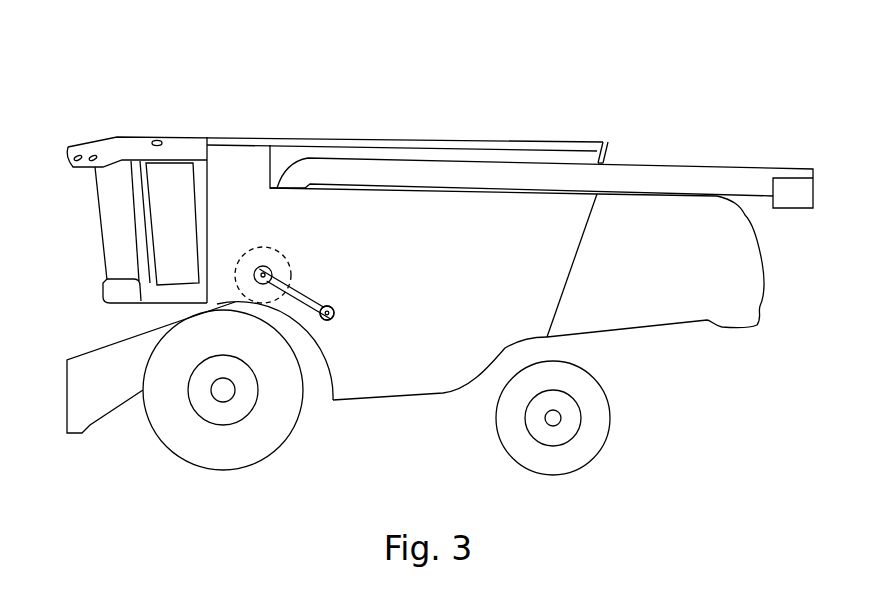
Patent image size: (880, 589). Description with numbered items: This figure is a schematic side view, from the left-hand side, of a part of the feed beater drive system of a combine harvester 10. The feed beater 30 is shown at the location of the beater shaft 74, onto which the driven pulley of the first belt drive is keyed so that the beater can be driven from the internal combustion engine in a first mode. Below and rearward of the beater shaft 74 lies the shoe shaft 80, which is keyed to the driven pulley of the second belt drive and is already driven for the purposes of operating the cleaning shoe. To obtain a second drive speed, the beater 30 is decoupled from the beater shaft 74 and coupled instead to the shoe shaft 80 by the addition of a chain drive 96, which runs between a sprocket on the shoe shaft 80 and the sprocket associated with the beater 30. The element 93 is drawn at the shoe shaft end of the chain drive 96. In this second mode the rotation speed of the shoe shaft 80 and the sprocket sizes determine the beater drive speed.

The agricultural combine harvester 10 is at (203, 117).
The beater 30 is at (260, 248).
The beater shaft 74 is at (268, 270).
The chain drive 96 is at (308, 287).
The pin 93 is at (333, 310).
The shoe shaft 80 is at (329, 320).